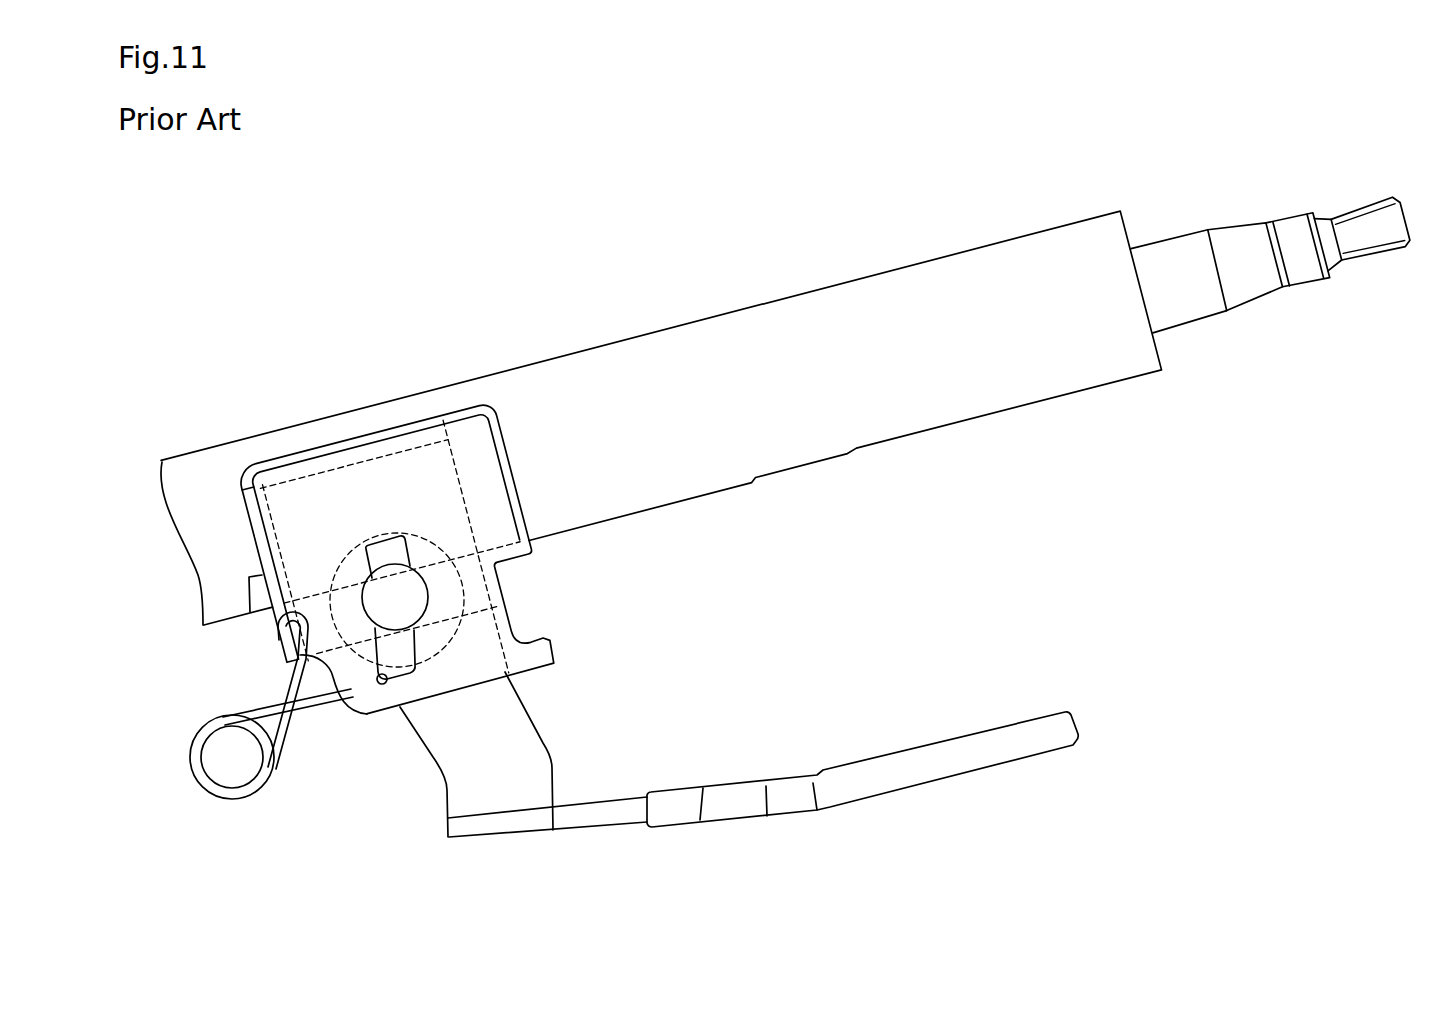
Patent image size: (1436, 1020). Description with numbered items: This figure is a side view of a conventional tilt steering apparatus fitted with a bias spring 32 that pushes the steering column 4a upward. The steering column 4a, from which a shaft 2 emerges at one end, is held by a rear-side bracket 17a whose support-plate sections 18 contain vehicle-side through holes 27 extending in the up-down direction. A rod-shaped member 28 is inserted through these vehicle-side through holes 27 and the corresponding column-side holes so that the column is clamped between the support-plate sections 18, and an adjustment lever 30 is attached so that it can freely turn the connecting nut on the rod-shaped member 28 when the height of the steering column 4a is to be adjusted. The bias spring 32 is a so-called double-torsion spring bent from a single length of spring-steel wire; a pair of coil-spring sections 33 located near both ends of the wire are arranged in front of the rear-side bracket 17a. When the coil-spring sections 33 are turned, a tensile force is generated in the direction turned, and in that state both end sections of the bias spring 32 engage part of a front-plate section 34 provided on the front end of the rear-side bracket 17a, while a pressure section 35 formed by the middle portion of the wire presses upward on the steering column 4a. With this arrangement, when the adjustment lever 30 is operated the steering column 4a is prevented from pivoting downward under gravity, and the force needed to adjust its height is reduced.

The steering shaft 2 is at (1165, 260).
The steering column 4a is at (797, 333).
The rear-side bracket 17a is at (462, 404).
The support-plate sections 18 is at (440, 522).
The vehicle-side through holes 27 is at (377, 540).
The rod-shaped member 28 is at (410, 606).
The adjustment lever 30 is at (943, 772).
The bias spring 32 is at (248, 793).
The coil-spring sections 33 is at (205, 783).
The front-plate section 34 is at (252, 513).
The pressure section 35 is at (383, 668).